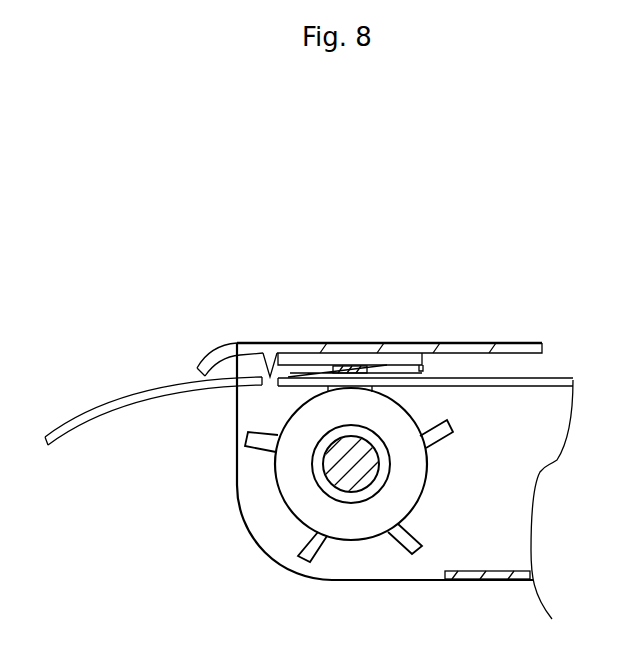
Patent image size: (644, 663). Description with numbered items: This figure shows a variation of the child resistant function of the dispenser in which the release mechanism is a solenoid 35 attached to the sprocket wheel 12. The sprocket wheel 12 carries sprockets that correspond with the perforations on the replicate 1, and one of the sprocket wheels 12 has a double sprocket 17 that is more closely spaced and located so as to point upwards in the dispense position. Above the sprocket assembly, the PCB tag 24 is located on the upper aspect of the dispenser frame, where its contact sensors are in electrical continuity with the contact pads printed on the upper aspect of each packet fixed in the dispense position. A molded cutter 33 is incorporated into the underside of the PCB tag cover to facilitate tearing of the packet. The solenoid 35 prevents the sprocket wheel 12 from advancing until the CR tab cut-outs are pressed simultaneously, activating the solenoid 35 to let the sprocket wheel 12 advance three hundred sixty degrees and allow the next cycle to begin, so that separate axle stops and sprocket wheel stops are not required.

The replicate 1 is at (545, 380).
The sprocket wheel 12 is at (280, 490).
The double sprocket 17 is at (367, 367).
The PCB tag 24 is at (398, 352).
The molded cutter 33 is at (270, 352).
The solenoid 35 is at (350, 467).